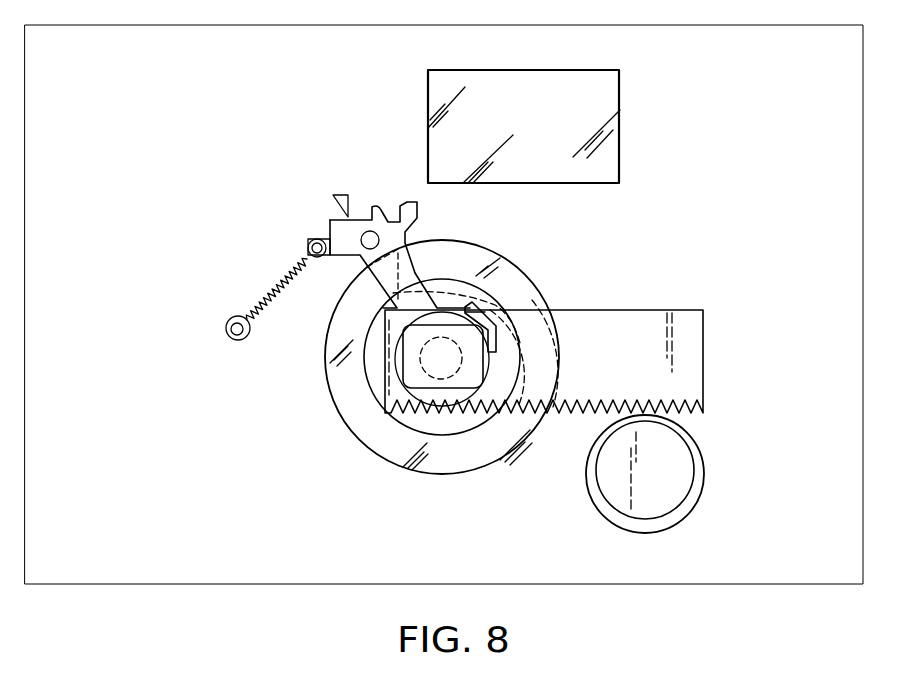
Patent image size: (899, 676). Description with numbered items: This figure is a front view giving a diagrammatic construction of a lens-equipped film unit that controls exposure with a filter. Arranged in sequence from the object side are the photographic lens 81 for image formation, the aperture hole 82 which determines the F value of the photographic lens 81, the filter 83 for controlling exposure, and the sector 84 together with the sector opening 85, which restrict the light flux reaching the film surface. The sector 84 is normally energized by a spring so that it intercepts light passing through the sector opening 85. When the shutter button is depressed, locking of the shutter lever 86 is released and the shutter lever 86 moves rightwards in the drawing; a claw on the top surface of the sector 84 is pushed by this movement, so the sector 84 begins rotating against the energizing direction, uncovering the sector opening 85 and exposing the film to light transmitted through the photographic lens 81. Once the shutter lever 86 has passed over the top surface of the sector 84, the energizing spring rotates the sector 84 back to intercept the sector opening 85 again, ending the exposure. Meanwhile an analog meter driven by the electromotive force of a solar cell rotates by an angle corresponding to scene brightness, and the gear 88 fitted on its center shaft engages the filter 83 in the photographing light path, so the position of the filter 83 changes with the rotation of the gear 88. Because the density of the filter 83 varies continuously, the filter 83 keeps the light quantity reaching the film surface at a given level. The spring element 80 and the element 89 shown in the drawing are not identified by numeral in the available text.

The spring 80 is at (270, 285).
The photographic lens 81 is at (330, 388).
The aperture hole 82 is at (523, 297).
The filter 83 is at (695, 328).
The sector 84 is at (330, 220).
The sector opening 85 is at (430, 390).
The shutter lever 86 is at (345, 195).
The gear 88 is at (693, 507).
The plate 89 is at (602, 128).